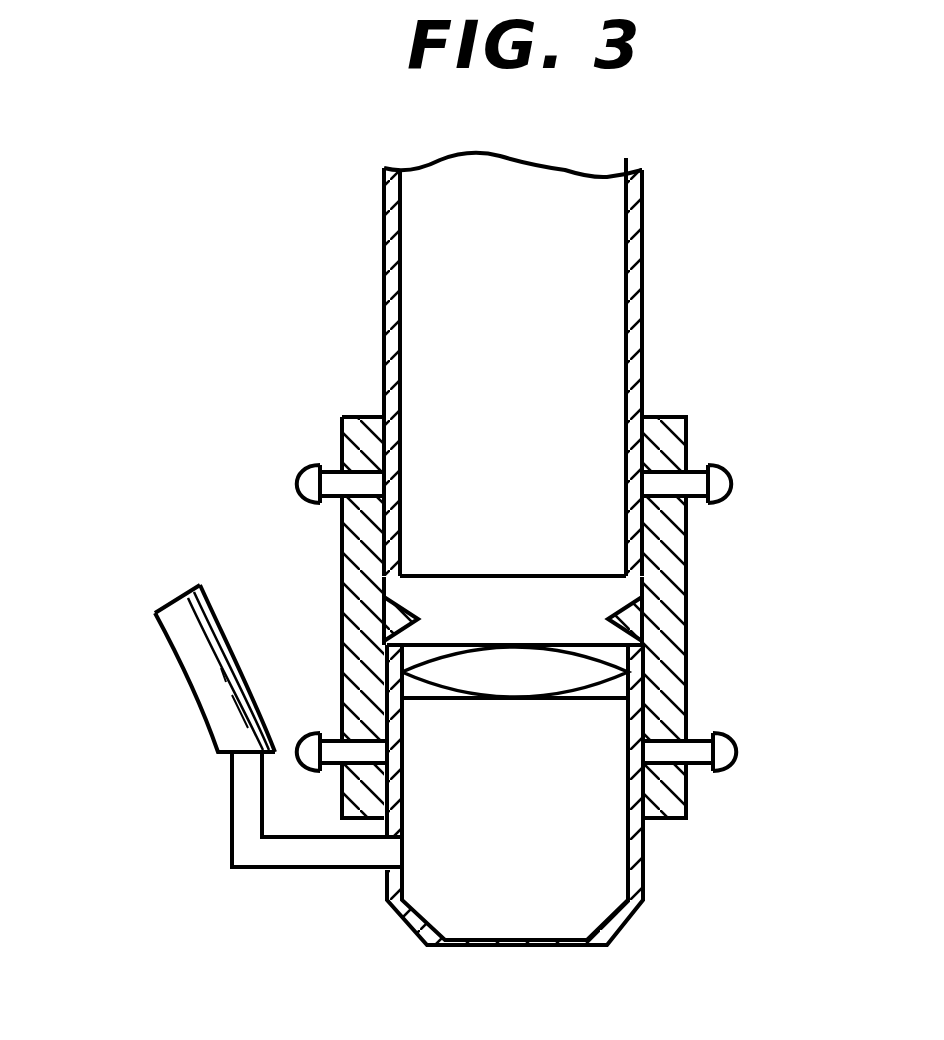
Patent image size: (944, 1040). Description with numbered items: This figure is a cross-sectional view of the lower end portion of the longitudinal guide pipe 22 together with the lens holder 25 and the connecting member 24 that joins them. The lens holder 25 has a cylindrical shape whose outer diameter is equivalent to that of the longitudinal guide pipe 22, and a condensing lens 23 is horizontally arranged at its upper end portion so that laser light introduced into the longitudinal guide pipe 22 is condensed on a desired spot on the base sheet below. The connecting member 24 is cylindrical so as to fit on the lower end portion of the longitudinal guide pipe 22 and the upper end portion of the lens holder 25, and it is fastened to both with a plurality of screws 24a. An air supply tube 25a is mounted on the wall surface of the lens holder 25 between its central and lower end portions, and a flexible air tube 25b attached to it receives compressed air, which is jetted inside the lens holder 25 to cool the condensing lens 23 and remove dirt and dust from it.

The longitudinal guide pipe 22 is at (641, 281).
The condensing lens 23 is at (607, 668).
The connecting member 24 is at (687, 580).
The screws 24a is at (297, 479).
The lens holder 25 is at (644, 866).
The air supply tube 25a is at (298, 858).
The flexible air tube 25b is at (187, 661).